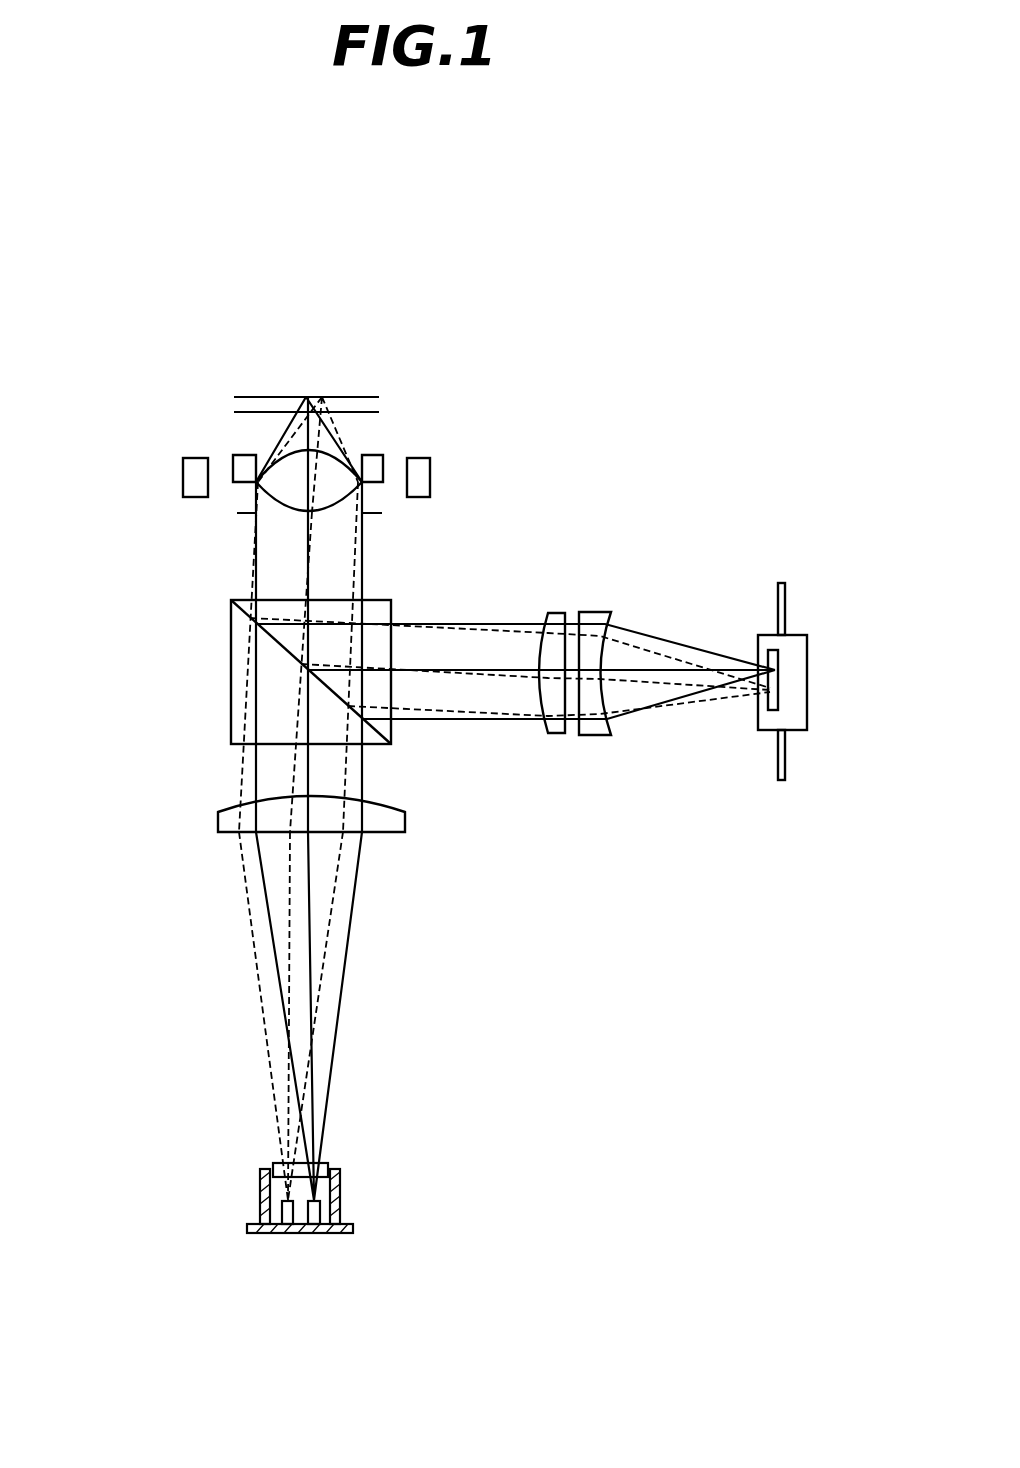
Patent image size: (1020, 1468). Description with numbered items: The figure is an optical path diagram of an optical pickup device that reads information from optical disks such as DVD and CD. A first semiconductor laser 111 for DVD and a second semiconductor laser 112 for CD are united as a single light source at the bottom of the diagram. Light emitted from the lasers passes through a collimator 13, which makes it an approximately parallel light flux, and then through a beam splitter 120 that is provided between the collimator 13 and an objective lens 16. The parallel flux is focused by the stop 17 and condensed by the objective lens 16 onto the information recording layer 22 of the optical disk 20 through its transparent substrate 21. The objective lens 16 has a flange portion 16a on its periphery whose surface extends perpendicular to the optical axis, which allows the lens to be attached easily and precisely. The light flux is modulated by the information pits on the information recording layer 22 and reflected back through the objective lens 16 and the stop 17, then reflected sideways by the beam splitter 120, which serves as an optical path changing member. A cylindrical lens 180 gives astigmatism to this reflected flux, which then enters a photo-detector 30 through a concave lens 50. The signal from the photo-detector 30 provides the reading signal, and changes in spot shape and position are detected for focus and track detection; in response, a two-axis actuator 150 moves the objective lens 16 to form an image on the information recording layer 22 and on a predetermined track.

The optical disk 20 is at (234, 349).
The transparent substrate 21 is at (234, 412).
The information recording layer 22 is at (280, 397).
The objective lens 16 is at (237, 451).
The flange portion 16a is at (383, 456).
The two-axis actuator 150 is at (431, 473).
The stop 17 is at (238, 513).
The beam splitter 120 is at (231, 678).
The collimator 13 is at (218, 813).
The cylindrical lens 180 is at (556, 614).
The concave lens 50 is at (597, 611).
The photo-detector 30 is at (816, 679).
The first semiconductor laser 111 is at (322, 1236).
The second semiconductor laser 112 is at (272, 1236).